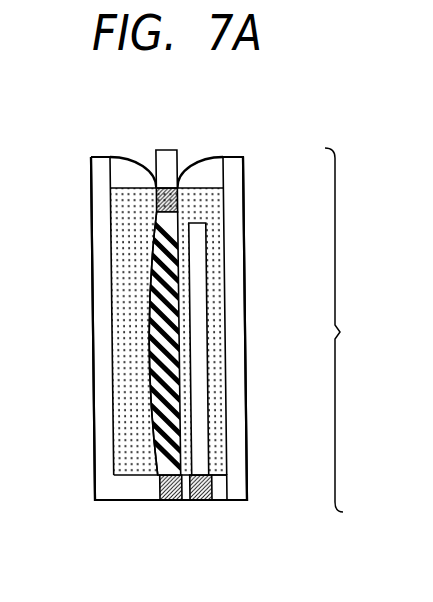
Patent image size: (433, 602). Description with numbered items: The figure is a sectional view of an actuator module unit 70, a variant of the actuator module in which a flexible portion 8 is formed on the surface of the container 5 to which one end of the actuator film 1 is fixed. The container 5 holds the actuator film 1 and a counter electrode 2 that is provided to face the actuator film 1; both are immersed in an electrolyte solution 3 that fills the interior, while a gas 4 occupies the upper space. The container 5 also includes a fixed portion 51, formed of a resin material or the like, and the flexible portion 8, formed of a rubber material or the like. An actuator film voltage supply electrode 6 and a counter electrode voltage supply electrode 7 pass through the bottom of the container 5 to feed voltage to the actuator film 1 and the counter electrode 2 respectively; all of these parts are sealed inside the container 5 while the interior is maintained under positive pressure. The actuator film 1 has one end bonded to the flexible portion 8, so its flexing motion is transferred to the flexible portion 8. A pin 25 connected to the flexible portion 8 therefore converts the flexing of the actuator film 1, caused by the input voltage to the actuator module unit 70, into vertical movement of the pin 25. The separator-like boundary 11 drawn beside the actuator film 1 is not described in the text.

The actuator film 1 is at (153, 232).
The counter electrode 2 is at (200, 270).
The electrolyte solution 3 is at (123, 365).
The gas 4 is at (210, 175).
The container 5 is at (341, 330).
The actuator film voltage supply electrode 6 is at (160, 488).
The counter electrode voltage supply electrode 7 is at (222, 499).
The flexible portion 8 is at (135, 158).
The separator 11 is at (137, 281).
The pin 25 is at (174, 153).
The fixed portion 51 is at (228, 482).
The actuator module unit 70 is at (212, 570).